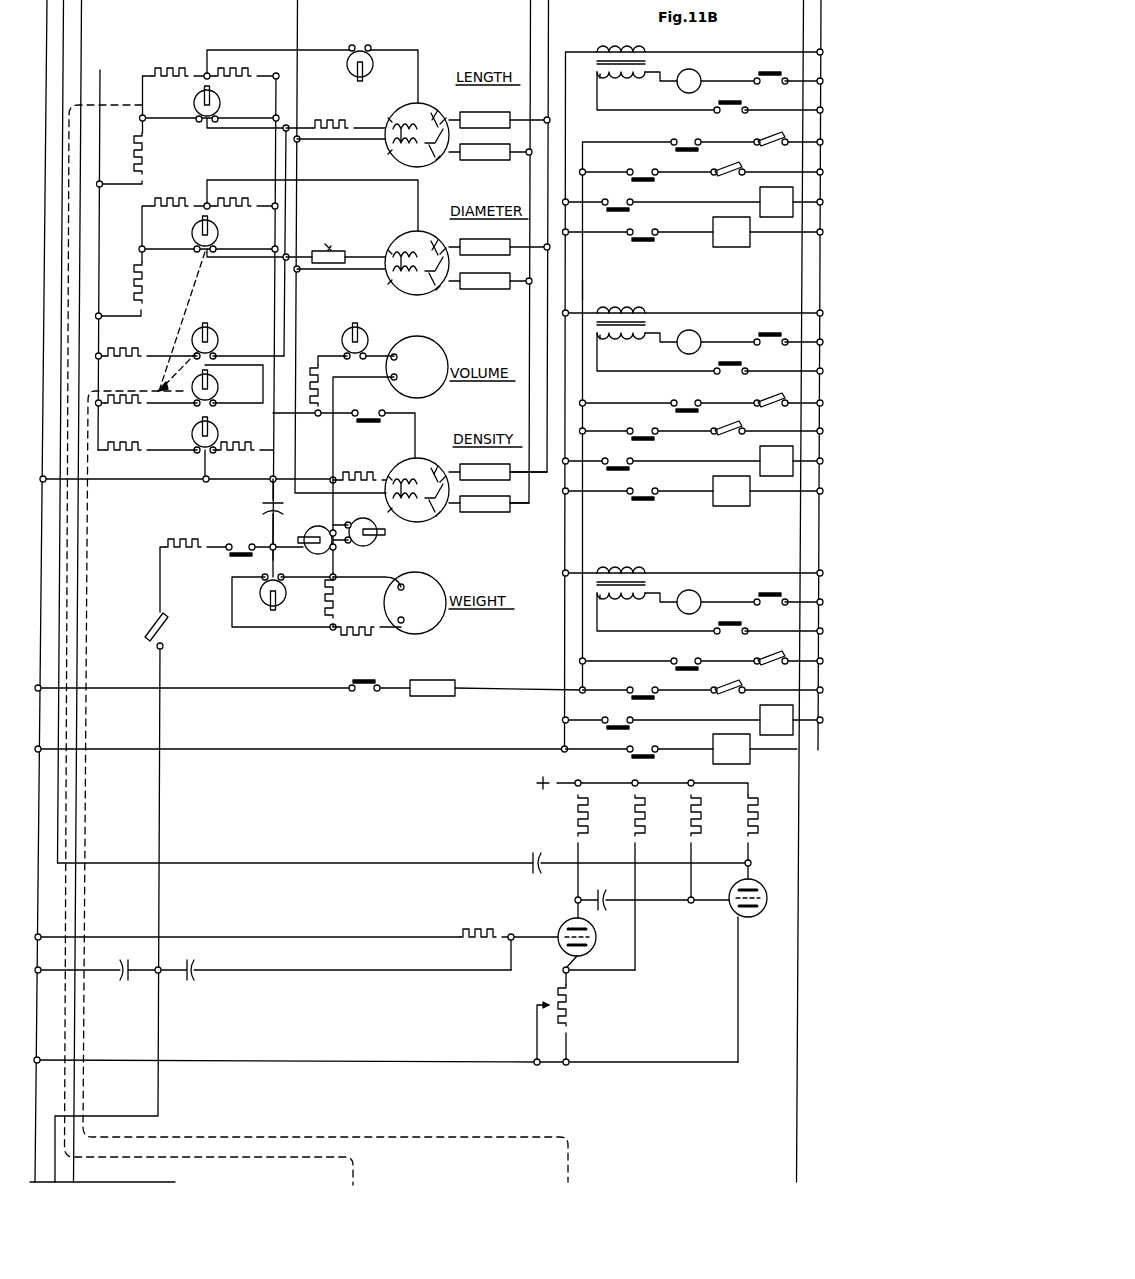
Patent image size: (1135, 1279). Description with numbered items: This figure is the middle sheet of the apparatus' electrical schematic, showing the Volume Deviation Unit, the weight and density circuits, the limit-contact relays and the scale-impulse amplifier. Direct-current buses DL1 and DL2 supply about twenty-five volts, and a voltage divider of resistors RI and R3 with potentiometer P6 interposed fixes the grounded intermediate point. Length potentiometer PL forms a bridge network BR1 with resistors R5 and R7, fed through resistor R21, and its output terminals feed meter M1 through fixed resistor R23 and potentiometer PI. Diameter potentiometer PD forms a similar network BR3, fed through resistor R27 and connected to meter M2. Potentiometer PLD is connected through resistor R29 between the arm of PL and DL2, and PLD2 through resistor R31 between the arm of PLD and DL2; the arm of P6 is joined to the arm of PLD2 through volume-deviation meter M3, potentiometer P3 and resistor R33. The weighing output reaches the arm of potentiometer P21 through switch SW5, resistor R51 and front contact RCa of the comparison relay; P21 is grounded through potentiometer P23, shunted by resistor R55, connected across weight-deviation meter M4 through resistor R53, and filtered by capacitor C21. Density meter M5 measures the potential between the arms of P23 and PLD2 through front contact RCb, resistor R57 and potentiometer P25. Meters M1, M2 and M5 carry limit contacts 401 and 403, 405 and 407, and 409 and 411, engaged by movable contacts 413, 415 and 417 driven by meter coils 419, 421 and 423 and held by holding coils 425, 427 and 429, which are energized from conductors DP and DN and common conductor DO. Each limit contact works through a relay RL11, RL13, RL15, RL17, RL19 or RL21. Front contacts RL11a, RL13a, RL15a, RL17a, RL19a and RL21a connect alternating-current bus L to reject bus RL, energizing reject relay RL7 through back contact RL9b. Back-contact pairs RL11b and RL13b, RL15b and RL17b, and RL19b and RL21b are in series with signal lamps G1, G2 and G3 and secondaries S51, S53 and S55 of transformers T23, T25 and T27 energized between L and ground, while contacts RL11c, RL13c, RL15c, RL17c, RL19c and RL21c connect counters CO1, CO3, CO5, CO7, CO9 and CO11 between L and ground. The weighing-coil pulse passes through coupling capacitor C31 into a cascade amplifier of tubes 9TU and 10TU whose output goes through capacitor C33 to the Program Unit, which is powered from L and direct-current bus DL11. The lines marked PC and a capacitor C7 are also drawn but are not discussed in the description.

The power conductor lines PC is at (46, 31).
The direct-current bus DL2 is at (99, 70).
The direct-current bus DL1 is at (285, 275).
The common conductor DO is at (307, 6).
The lock-in conductor DP is at (530, 14).
The lock-in conductor DN is at (558, 6).
The direct current bus DL11 is at (803, 13).
The alternating current bus L is at (803, 38).
The reject bus RL is at (583, 282).
The bridge network BR1 is at (178, 104).
The resistor R5 is at (184, 72).
The resistor R7 is at (243, 84).
The length potentiometer PL is at (215, 102).
The resistor R21 is at (141, 165).
The bridge network BR3 is at (180, 231).
The diameter potentiometer PD is at (215, 234).
The resistor R27 is at (141, 299).
The potentiometer PLD is at (213, 334).
The resistor R29 is at (146, 354).
The potentiometer PLD2 is at (213, 394).
The resistor R31 is at (141, 400).
The potentiometer P6 is at (198, 442).
The resistor R3 is at (136, 446).
The resistor RI is at (241, 450).
The potentiometer PI is at (346, 64).
The meter M1 is at (420, 96).
The fixed resistor R23 is at (336, 122).
The relay RL13 is at (499, 120).
The relay RL11 is at (490, 152).
The limit contact 403 is at (438, 112).
The movable contact 413 is at (445, 121).
The meter coil 419 is at (389, 117).
The holding coil 425 is at (388, 150).
The limit contact 401 is at (437, 158).
The meter M2 is at (420, 227).
The relay RL17 is at (499, 247).
The relay RL15 is at (490, 281).
The limit contact 407 is at (446, 228).
The movable contact 415 is at (447, 256).
The meter coil 421 is at (388, 252).
The holding coil 427 is at (388, 280).
The limit contact 405 is at (436, 290).
The meter M3 is at (424, 332).
The potentiometer P3 is at (359, 329).
The resistor R33 is at (315, 358).
The front contact RCb is at (370, 414).
The density deviation meter M5 is at (416, 448).
The fixed resistor R57 is at (334, 480).
The relay RL21 is at (498, 472).
The relay RL19 is at (489, 504).
The limit contact 411 is at (438, 464).
The movable contact 417 is at (448, 480).
The meter coil 423 is at (386, 470).
The holding coil 429 is at (390, 504).
The limit contact 409 is at (438, 514).
The filtering capacitor C21 is at (265, 510).
The resistor R51 is at (204, 538).
The front contact RCa is at (230, 558).
The switch SW5 is at (162, 630).
The potentiometer P23 is at (320, 530).
The potentiometer P25 is at (368, 547).
The potentiometer P21 is at (283, 592).
The resistor R55 is at (338, 607).
The resistor R53 is at (366, 633).
The weight-deviation meter M4 is at (426, 563).
The back contact RL9b is at (354, 680).
The reject relay RL7 is at (432, 688).
The transformer T23 is at (640, 47).
The secondary S51 is at (644, 92).
The signal lamp G1 is at (692, 73).
The back contact RL13b is at (782, 76).
The back contact RL11b is at (744, 105).
The front contact RL13a is at (672, 152).
The front contact RL11a is at (652, 181).
The contact RL13c is at (638, 211).
The counter CO1 is at (791, 202).
The contact RL11c is at (650, 243).
The counter CO3 is at (768, 232).
The transformer T25 is at (640, 308).
The secondary S53 is at (644, 353).
The signal lamp G2 is at (692, 334).
The back contact RL17b is at (780, 337).
The back contact RL15b is at (744, 366).
The front contact RL17a is at (672, 413).
The front contact RL15a is at (652, 441).
The contact RL17c is at (636, 471).
The counter CO5 is at (791, 461).
The contact RL15c is at (650, 502).
The counter CO7 is at (768, 491).
The transformer T27 is at (640, 568).
The secondary S55 is at (644, 613).
The signal lamp G3 is at (692, 594).
The back contact RL21b is at (780, 597).
The back contact RL19b is at (744, 626).
The front contact RL21a is at (672, 671).
The front contact RL19a is at (652, 700).
The contact RL21c is at (636, 730).
The counter CO9 is at (791, 720).
The contact RL19c is at (650, 760).
The counter CO11 is at (755, 749).
The capacitor C33 is at (531, 854).
The tube 10TU is at (766, 914).
The tube 9TU is at (590, 942).
The capacitor C7 is at (122, 965).
The coupling capacitor C31 is at (194, 966).